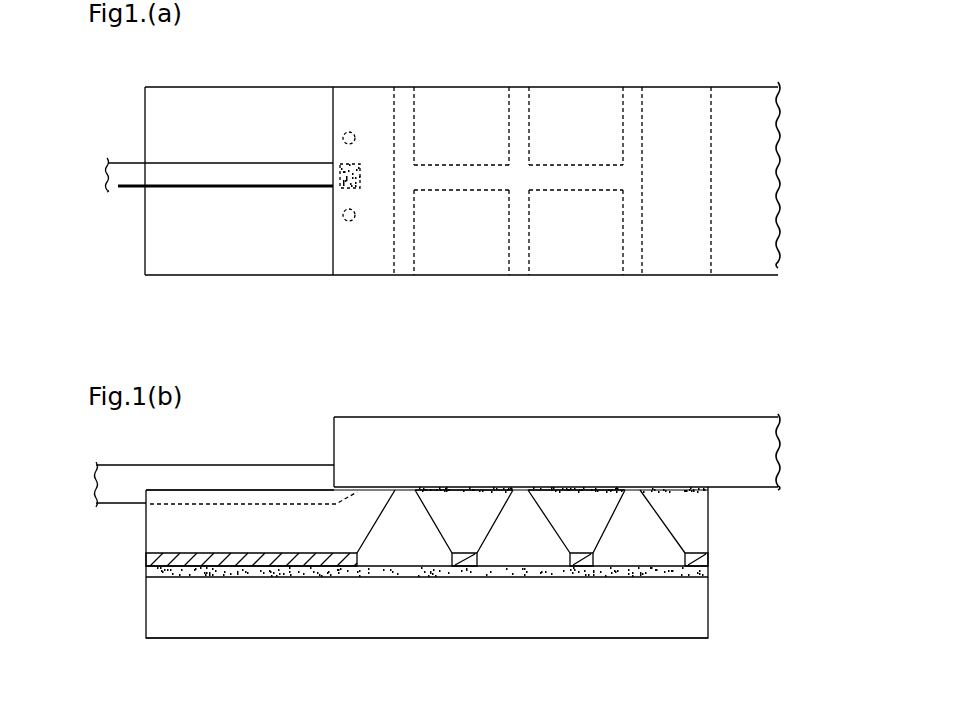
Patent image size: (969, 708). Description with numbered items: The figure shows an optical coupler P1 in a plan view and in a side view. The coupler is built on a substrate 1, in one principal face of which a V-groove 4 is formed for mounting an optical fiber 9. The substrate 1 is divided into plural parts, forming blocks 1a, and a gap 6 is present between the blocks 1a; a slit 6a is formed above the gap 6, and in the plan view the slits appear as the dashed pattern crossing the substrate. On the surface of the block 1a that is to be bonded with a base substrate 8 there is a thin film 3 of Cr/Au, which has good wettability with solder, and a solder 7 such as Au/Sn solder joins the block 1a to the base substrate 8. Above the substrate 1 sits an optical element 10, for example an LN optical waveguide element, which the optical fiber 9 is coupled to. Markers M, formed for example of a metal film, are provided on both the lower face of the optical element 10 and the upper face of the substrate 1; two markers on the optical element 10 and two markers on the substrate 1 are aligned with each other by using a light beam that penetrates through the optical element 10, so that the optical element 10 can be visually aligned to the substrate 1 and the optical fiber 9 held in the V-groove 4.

In FIG. 1A, the optical coupler P1 is at (62, 100).
In FIG. 1B, the substrate 1 is at (154, 535).
In FIG. 1B, the block 1a is at (700, 536).
In FIG. 1B, the thin film of Cr/Au 3 is at (706, 562).
In FIG. 1B, the V-groove 4 is at (163, 497).
In FIG. 1B, the gap 6 is at (645, 549).
In FIG. 1A, the slit 6a is at (632, 97).
In FIG. 1B, the solder 7 is at (712, 498).
In FIG. 1B, the base substrate 8 is at (700, 620).
In FIG. 1A, the optical fiber 9 is at (126, 186).
In FIG. 1B, the optical fiber 9 is at (118, 470).
In FIG. 1A, the optical element 10 is at (762, 242).
In FIG. 1B, the optical element 10 is at (764, 460).
In FIG. 1A, the marker M is at (352, 122).